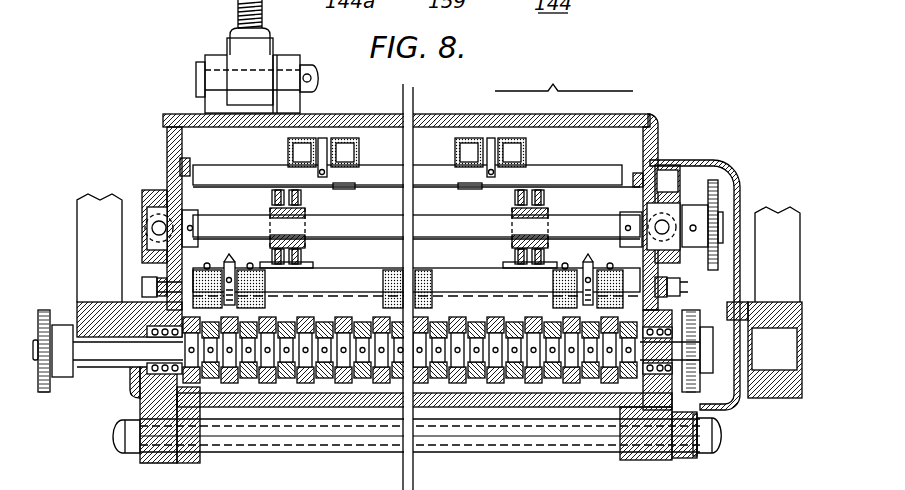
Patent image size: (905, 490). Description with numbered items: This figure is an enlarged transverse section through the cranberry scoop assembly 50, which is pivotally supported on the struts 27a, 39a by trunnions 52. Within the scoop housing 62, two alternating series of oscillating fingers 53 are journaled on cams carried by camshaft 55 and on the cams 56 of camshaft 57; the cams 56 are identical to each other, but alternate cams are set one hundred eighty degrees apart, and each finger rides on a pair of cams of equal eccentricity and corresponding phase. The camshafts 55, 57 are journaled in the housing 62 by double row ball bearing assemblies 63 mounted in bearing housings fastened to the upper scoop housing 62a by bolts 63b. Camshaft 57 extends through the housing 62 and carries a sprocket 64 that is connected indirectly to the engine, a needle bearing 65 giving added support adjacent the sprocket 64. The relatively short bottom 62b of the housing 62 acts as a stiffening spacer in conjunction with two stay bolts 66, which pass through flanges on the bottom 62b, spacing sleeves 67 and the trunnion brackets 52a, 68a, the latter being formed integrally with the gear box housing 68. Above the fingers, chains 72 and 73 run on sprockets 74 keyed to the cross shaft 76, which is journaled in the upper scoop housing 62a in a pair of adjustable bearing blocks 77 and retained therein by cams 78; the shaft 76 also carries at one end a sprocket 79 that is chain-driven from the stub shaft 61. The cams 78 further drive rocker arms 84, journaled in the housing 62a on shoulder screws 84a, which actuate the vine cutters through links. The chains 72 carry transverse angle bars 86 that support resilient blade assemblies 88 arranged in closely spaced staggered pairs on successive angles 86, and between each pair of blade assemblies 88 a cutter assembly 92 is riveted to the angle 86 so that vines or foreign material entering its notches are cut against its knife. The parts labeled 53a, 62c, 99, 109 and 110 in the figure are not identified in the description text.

The strut 27a is at (88, 205).
The strut 39a is at (767, 212).
The scoop assembly 50 is at (546, 86).
The trunnion 52 is at (100, 378).
The trunnion bracket 52a is at (150, 453).
The oscillating finger 53 is at (355, 320).
The spacer 53a is at (47, 485).
The camshaft 55 is at (420, 461).
The cam 56 is at (410, 388).
The camshaft 57 is at (127, 352).
The stub shaft 61 is at (282, 485).
The scoop housing 62 is at (658, 120).
The upper scoop housing 62a is at (170, 138).
The bottom of housing 62b is at (325, 407).
The top plate 62c is at (365, 114).
The double row ball bearing assembly 63 is at (118, 305).
The bolt 63b is at (683, 287).
The sprocket 64 is at (45, 318).
The needle bearing 65 is at (80, 378).
The stay bolt 66 is at (640, 442).
The spacing sleeve 67 is at (497, 452).
The gear box housing 68 is at (725, 410).
The trunnion bracket 68a is at (685, 460).
The chain 72 is at (270, 200).
The chain 73 is at (548, 200).
The sprocket 74 is at (305, 214).
The cross shaft 76 is at (385, 228).
The adjustable bearing block 77 is at (145, 212).
The cam 78 is at (195, 205).
The sprocket 79 is at (718, 187).
The rocker arm 84 is at (658, 128).
The shoulder screw 84a is at (165, 158).
The transverse angle bar 86 is at (562, 172).
The resilient blade assembly 88 is at (337, 138).
The cutter assembly 92 is at (323, 158).
The pivot 99 is at (140, 228).
The bracket 109 is at (207, 55).
The plate 110 is at (196, 70).